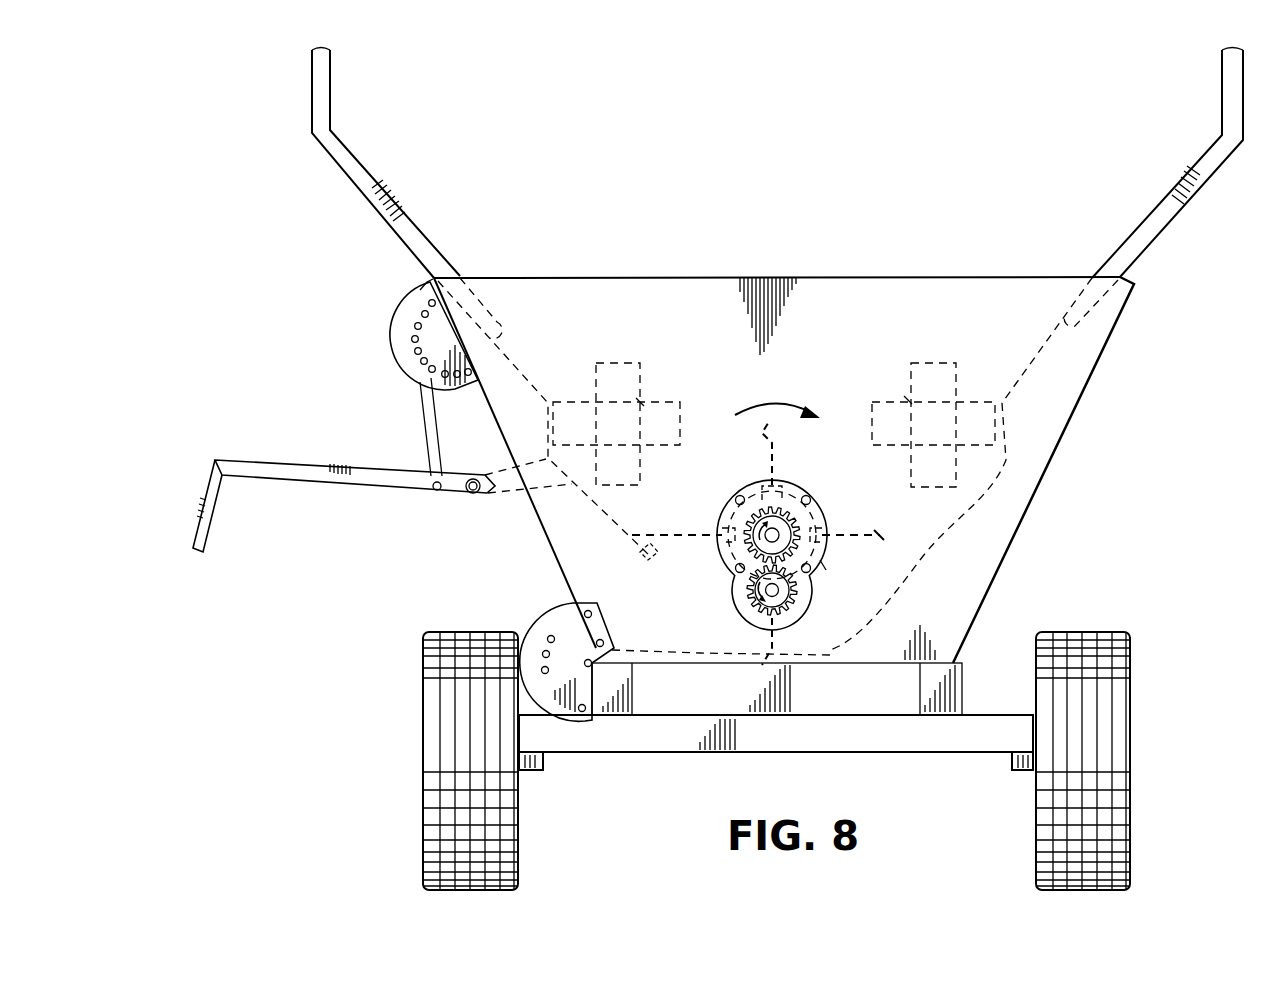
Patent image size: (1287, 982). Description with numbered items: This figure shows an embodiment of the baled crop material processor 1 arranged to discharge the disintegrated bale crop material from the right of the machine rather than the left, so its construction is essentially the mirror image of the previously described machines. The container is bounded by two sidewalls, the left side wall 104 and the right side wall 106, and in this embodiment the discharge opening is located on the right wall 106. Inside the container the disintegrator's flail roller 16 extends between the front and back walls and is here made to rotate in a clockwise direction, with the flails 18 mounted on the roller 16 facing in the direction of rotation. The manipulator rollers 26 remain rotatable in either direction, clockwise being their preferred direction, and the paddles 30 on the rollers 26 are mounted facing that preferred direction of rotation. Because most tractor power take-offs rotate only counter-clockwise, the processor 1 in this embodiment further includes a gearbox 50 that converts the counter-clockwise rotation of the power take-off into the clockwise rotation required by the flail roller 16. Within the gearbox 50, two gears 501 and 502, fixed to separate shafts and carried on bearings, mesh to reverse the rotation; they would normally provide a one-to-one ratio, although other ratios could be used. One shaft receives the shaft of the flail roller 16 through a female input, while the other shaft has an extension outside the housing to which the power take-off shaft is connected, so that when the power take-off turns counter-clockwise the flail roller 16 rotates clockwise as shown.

The baled crop material processor 1 is at (342, 211).
The left side wall 104 is at (1160, 233).
The right side wall 106 is at (400, 238).
The paddles 30 is at (615, 363).
The manipulator rollers 26 is at (640, 402).
The flail roller 16 is at (752, 500).
The flails 18 is at (697, 533).
The gearbox 50 is at (822, 565).
The gear 501 is at (782, 518).
The gear 502 is at (786, 598).